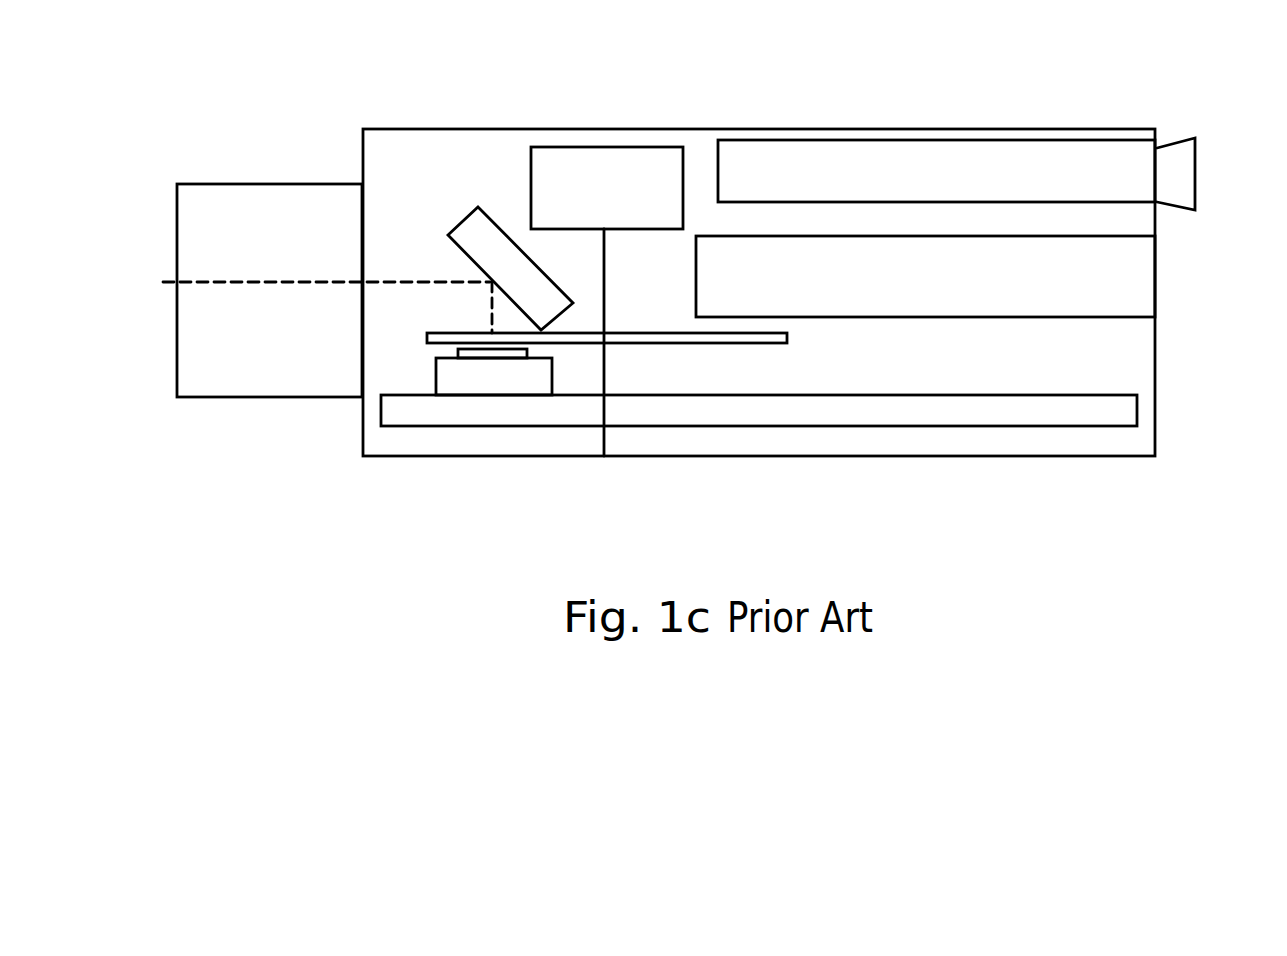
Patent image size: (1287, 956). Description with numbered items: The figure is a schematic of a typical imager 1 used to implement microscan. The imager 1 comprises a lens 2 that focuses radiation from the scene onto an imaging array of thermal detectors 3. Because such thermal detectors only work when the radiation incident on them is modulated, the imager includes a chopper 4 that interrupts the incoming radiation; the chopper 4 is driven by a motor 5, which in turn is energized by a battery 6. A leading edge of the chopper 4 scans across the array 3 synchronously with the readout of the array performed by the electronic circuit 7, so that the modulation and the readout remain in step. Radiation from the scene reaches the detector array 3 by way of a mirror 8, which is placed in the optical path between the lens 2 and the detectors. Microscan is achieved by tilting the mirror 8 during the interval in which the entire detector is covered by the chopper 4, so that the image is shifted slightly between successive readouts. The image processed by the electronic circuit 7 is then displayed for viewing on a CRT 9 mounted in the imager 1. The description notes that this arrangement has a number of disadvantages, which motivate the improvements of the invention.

The imager 1 is at (840, 462).
The lens 2 is at (190, 398).
The imaging array of thermal detectors 3 is at (488, 359).
The chopper 4 is at (428, 343).
The motor 5 is at (608, 146).
The battery 6 is at (1128, 274).
The electronic circuit 7 is at (565, 426).
The mirror 8 is at (470, 217).
The CRT 9 is at (797, 139).